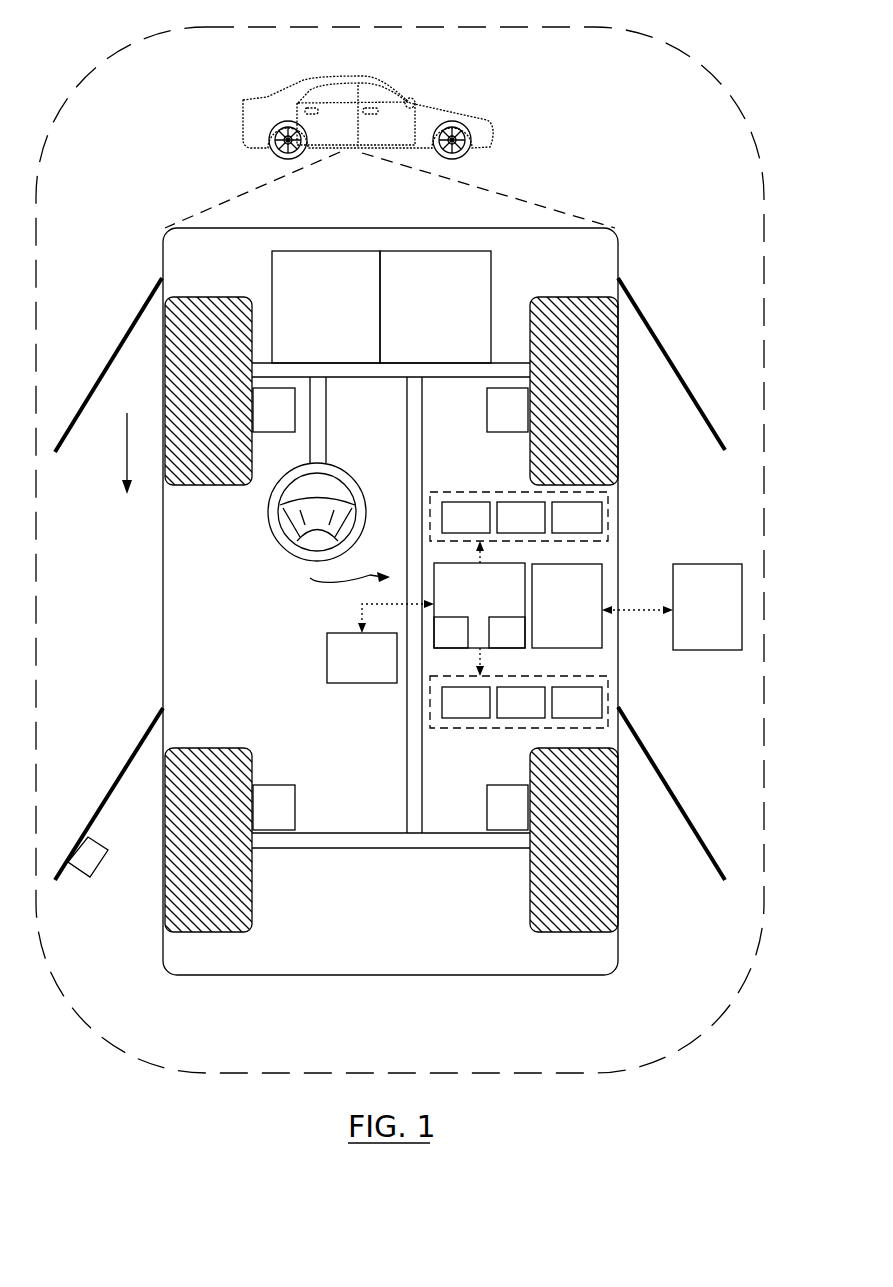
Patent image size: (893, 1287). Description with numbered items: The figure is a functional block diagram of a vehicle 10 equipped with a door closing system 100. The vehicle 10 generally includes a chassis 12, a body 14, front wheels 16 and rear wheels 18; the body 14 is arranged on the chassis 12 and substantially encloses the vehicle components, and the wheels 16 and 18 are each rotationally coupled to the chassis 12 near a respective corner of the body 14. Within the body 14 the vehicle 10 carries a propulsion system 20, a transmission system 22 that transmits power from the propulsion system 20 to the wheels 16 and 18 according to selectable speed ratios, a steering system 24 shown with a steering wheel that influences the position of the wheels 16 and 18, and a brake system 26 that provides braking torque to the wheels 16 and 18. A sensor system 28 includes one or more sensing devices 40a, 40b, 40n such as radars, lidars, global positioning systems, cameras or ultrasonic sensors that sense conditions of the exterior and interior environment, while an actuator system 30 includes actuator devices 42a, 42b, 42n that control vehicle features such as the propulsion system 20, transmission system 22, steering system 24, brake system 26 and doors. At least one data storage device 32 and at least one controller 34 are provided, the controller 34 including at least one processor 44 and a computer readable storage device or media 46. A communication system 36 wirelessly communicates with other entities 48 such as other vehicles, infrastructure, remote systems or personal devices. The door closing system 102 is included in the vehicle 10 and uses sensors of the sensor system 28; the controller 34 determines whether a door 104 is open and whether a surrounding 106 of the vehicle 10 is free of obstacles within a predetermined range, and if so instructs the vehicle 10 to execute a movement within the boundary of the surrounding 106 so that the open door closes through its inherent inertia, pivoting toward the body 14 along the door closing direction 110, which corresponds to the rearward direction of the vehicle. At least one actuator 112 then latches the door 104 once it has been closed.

The vehicle 10 is at (243, 124).
The door closing system 100 is at (580, 198).
The chassis 12 is at (406, 776).
The body 14 is at (163, 678).
The front wheels 16 is at (193, 297).
The rear wheels 18 is at (215, 932).
The propulsion system 20 is at (339, 316).
The transmission system 22 is at (449, 316).
The steering system 24 is at (334, 404).
The brake system 26 is at (287, 421).
The sensor system 28 is at (477, 493).
The actuator system 30 is at (470, 728).
The data storage device 32 is at (375, 670).
The controller 34 is at (493, 600).
The communication system 36 is at (580, 617).
The sensing device 40a is at (483, 530).
The sensing device 40b is at (538, 530).
The sensing device 40n is at (594, 530).
The actuator device 42a is at (483, 715).
The actuator device 42b is at (538, 715).
The actuator device 42n is at (594, 715).
The processor 44 is at (463, 645).
The computer readable storage device or media 46 is at (519, 645).
The other entities 48 is at (720, 604).
The door closing system 102 is at (328, 574).
The door 104 is at (125, 337).
The surrounding 106 is at (230, 1053).
The door closing direction 110 is at (122, 452).
The actuator 112 is at (90, 863).